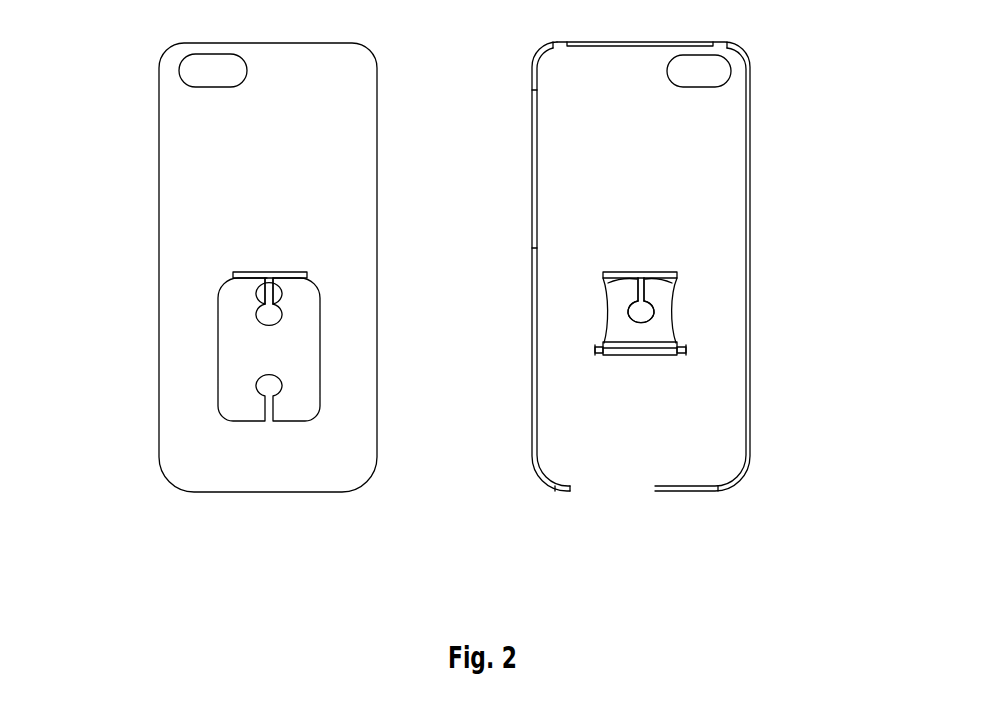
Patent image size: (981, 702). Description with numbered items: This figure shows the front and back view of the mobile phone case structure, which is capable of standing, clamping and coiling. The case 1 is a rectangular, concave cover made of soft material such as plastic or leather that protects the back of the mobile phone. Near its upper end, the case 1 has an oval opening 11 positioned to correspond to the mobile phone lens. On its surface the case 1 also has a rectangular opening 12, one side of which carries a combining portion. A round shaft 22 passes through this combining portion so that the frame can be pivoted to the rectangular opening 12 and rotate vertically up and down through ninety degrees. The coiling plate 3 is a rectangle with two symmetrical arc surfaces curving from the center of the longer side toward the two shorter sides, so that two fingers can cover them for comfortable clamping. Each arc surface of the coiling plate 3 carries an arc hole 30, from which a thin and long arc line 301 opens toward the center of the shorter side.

The case 1 is at (377, 148).
The oval opening 11 is at (177, 74).
The rectangular opening 12 is at (240, 272).
The coiling plate 3 is at (217, 337).
The thin and long arc line 301 is at (267, 290).
The arc hole 30 is at (257, 309).
The round shaft 22 is at (684, 354).